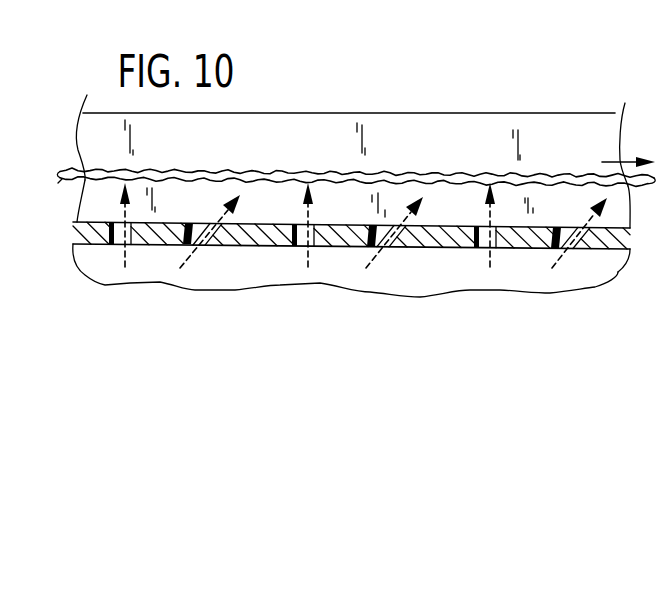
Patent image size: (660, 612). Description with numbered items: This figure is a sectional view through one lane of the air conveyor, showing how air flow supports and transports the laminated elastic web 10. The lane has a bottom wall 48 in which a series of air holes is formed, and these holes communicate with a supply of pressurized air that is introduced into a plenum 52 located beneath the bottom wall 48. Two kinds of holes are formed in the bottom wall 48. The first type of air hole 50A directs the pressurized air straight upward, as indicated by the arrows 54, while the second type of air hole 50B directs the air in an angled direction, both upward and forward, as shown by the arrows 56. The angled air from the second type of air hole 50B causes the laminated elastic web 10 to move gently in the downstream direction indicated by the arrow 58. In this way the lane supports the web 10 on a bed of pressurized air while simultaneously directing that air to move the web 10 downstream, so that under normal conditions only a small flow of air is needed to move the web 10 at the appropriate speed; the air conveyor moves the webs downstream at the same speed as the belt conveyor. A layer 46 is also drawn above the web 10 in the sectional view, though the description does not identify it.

The upper fibrous layer 46 is at (452, 130).
The laminated elastic web 10 is at (273, 170).
The arrow 58 is at (622, 184).
The arrows 54 is at (120, 193).
The arrows 56 is at (228, 195).
The first type of air hole 50A is at (120, 235).
The second type of air hole 50B is at (216, 242).
The bottom wall 48 is at (613, 238).
The plenum 52 is at (420, 278).